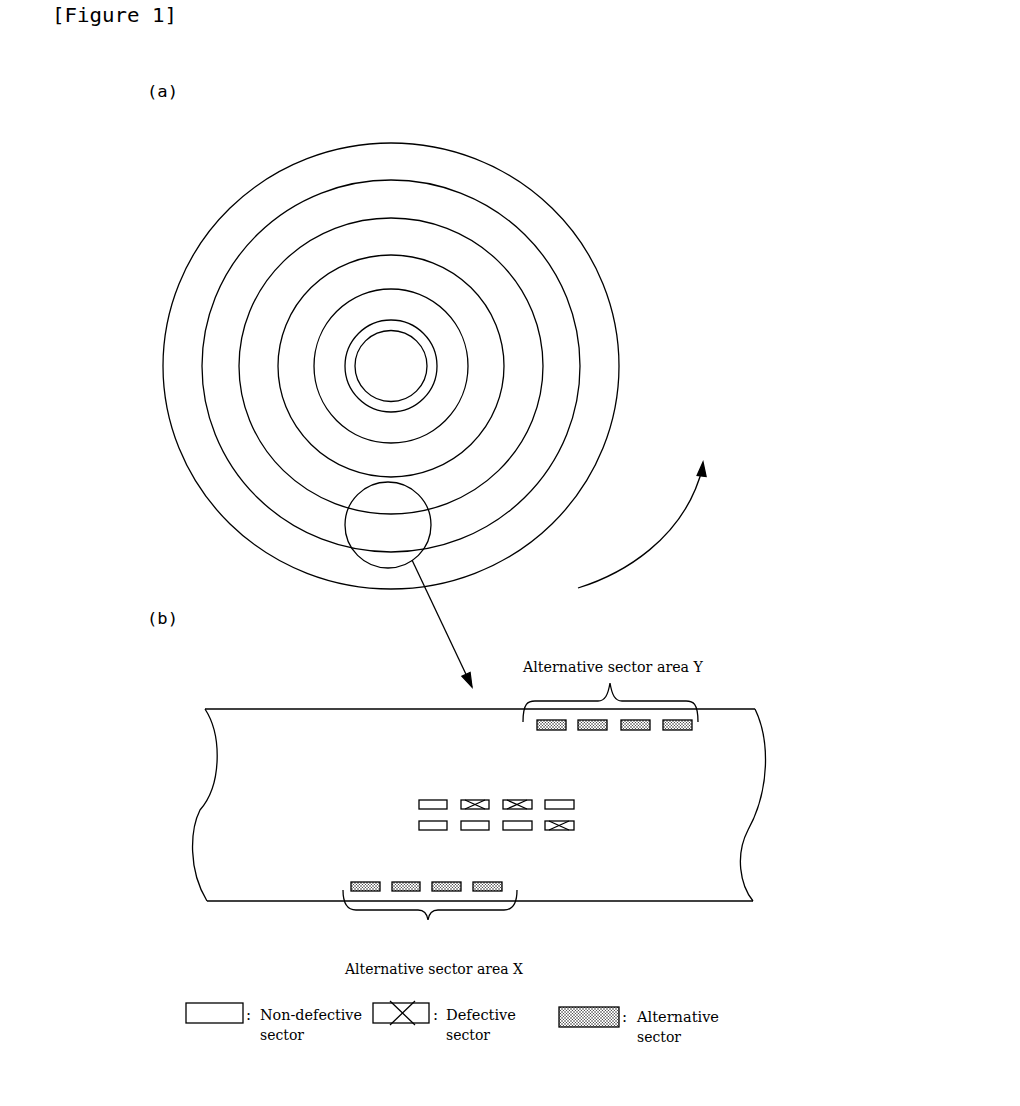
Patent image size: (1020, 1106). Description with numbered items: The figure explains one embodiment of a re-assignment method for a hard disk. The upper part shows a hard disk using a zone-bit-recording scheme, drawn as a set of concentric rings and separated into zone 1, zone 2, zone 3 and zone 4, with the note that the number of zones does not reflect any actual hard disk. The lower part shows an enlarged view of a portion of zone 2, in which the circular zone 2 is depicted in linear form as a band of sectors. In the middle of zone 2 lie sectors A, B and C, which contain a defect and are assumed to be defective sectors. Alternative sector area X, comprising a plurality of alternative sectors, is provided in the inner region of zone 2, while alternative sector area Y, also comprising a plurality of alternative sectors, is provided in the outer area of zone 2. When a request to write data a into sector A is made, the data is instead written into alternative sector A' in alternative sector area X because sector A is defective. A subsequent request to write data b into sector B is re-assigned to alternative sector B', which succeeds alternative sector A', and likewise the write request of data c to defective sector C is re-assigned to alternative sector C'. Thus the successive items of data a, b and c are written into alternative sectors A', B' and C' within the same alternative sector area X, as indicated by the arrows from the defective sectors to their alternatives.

The zone 1 is at (543, 225).
The zone 2 is at (535, 287).
The zone 3 is at (520, 350).
The zone 4 is at (480, 413).
The sector A is at (559, 838).
The sector B is at (517, 796).
The sector C is at (475, 796).
The alternative sector A' is at (511, 861).
The alternative sector B' is at (469, 850).
The alternative sector C' is at (427, 850).